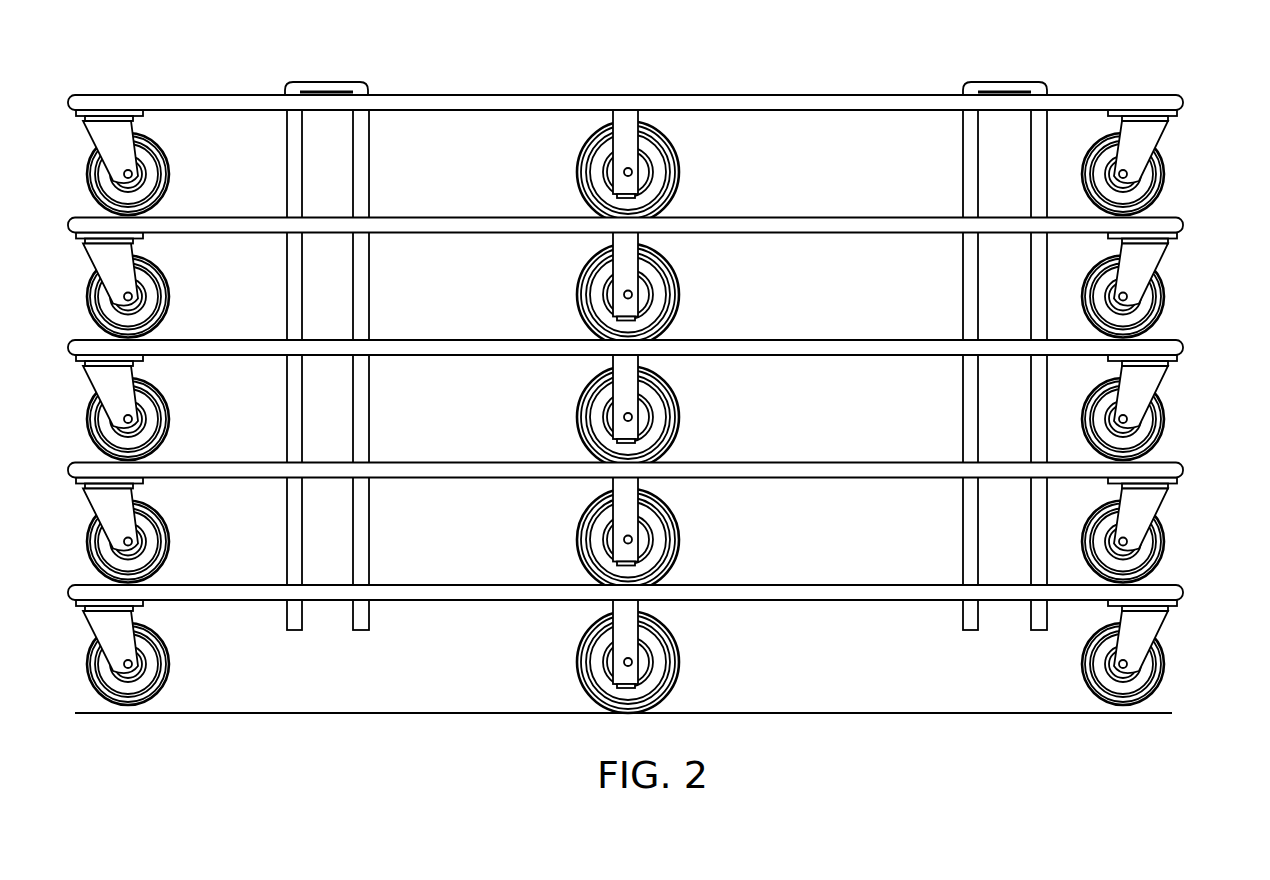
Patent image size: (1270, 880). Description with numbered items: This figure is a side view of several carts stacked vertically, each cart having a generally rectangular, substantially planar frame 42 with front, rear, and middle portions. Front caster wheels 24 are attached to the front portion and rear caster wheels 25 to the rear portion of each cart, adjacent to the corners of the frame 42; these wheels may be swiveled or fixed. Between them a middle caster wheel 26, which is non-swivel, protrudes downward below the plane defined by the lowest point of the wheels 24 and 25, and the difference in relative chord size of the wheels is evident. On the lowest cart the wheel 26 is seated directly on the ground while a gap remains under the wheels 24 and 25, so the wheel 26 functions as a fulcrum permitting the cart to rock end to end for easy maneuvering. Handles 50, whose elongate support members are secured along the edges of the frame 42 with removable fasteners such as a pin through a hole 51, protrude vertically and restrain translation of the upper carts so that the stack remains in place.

The front caster wheel 24 is at (1156, 168).
The rear caster wheel 25 is at (158, 168).
The middle caster wheel 26 is at (658, 168).
The frame 42 is at (492, 94).
The handle 50 is at (334, 80).
The hole 51 is at (360, 593).